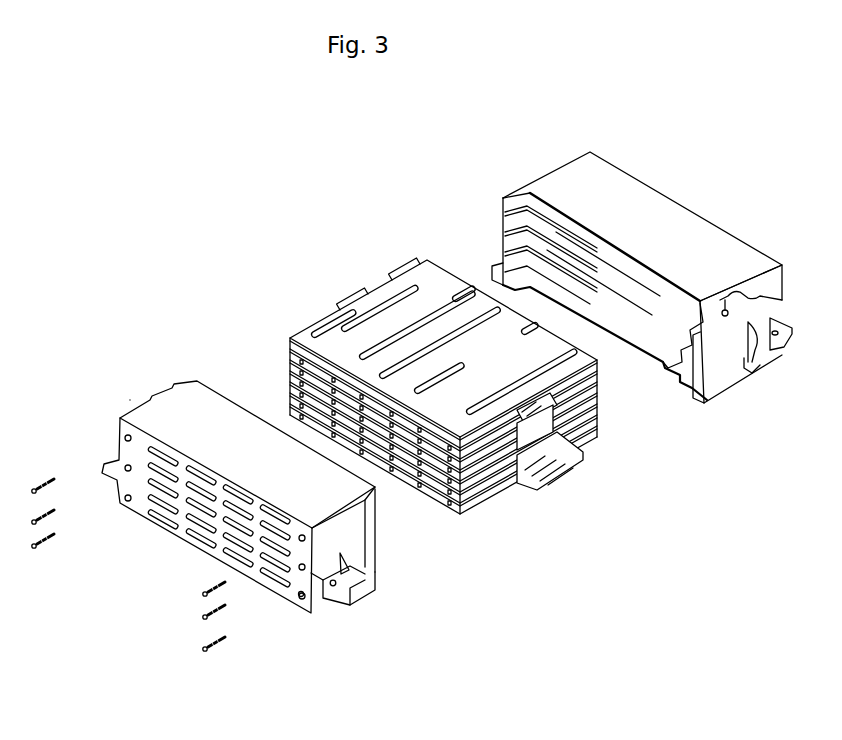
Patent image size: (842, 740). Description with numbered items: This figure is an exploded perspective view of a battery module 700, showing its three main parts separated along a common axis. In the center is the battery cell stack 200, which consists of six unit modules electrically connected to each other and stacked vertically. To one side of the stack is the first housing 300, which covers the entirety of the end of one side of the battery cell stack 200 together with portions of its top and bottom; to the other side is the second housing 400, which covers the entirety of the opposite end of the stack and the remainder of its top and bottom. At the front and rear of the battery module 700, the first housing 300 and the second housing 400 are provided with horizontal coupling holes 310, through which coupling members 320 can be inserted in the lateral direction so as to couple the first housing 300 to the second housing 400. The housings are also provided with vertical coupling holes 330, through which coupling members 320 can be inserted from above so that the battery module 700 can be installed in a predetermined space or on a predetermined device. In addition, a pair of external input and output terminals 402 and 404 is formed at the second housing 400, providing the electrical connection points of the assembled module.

The battery module 700 is at (131, 204).
The battery cell stack 200 is at (330, 274).
The first housing 300 is at (157, 378).
The horizontal coupling holes 310 is at (300, 598).
The coupling members 320 is at (212, 642).
The vertical coupling holes 330 is at (333, 587).
The second housing 400 is at (537, 159).
The external input and output terminal 402 is at (782, 288).
The external input and output terminal 404 is at (748, 372).